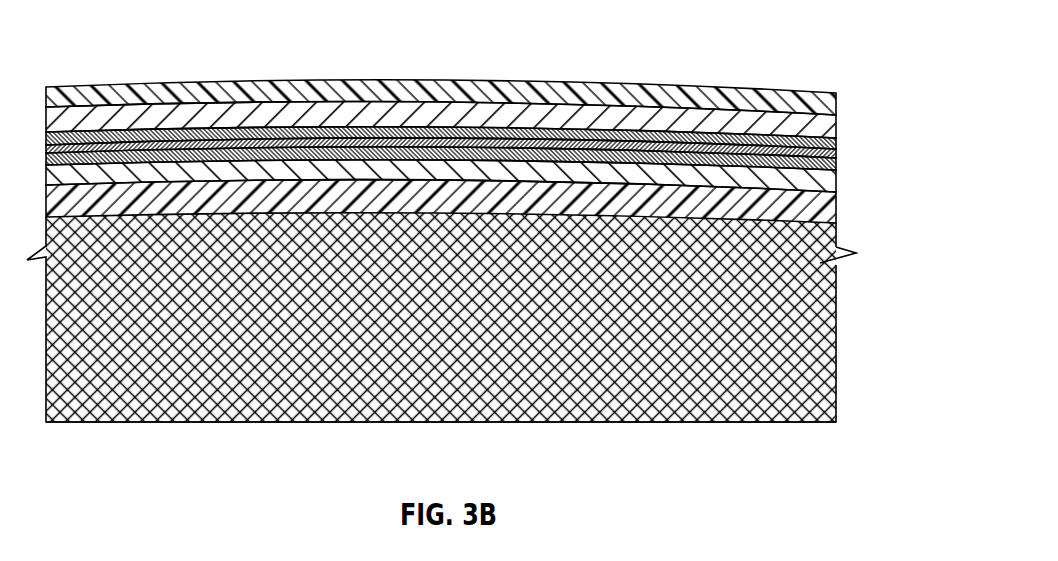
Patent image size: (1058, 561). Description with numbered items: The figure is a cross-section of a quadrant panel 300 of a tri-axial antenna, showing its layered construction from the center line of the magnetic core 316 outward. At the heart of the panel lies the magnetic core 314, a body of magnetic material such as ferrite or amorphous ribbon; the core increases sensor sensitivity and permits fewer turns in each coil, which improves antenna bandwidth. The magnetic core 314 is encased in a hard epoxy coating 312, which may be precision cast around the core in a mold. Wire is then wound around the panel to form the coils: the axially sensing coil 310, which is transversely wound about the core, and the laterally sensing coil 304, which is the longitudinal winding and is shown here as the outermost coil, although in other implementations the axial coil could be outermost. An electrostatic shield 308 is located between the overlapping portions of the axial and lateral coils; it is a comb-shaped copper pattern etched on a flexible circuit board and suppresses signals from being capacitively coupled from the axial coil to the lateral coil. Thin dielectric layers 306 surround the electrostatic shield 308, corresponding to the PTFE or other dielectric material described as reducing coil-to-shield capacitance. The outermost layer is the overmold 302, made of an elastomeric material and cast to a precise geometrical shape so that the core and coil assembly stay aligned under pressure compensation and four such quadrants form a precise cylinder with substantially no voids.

The panel 300 is at (472, 231).
The overmold 302 is at (792, 99).
The laterally sensing coil 304 is at (827, 125).
The thin hatched layer 306 is at (831, 143).
The electrostatic shield 308 is at (838, 159).
The axially sensing coil 310 is at (800, 220).
The epoxy coating 312 is at (856, 253).
The magnetic core 314 is at (817, 312).
The center line of the magnetic core 316 is at (719, 423).